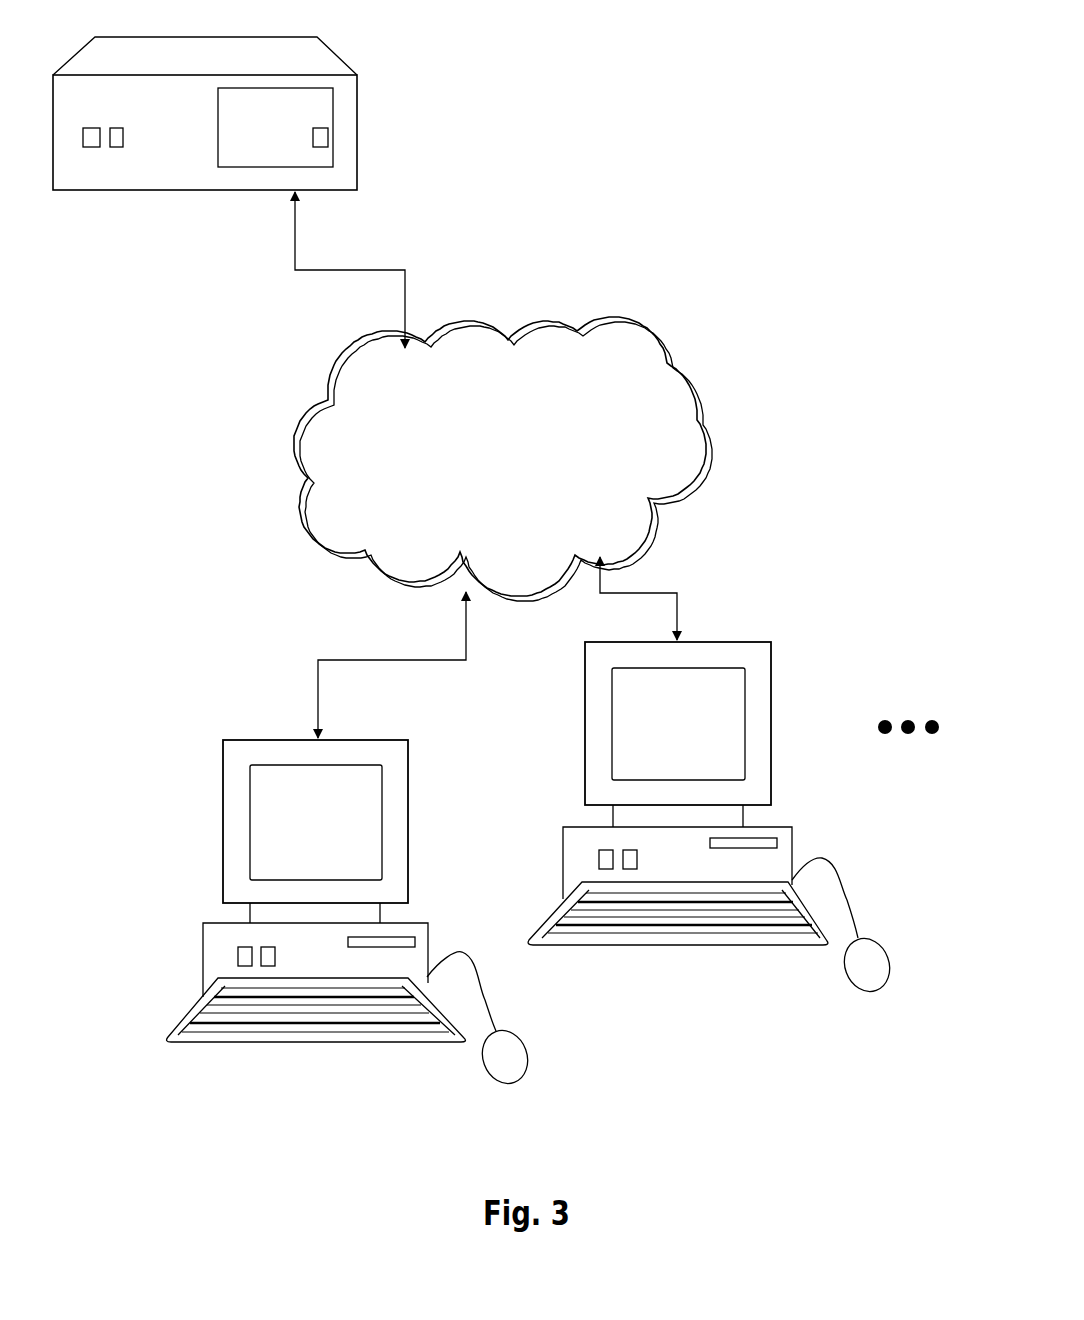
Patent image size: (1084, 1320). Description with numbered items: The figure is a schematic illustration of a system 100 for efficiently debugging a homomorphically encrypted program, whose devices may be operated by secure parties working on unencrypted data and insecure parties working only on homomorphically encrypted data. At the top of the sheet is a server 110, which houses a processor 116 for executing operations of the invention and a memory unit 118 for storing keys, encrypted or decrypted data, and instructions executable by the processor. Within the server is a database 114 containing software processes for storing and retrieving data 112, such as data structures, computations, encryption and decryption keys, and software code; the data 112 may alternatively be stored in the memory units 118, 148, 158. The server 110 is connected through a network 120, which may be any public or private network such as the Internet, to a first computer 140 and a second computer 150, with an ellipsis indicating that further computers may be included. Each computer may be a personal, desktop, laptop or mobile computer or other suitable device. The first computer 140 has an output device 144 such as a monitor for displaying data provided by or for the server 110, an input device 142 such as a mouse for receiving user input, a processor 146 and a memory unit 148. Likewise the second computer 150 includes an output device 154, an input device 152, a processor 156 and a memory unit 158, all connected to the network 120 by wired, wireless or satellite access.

The system 100 is at (785, 196).
The server 110 is at (222, 65).
The data 112 is at (320, 147).
The database 114 is at (275, 127).
The processor 116 is at (90, 147).
The memory unit 118 is at (116, 127).
The network 120 is at (503, 527).
The computer 140 is at (268, 738).
The input device 142 is at (504, 1031).
The output device 144 is at (316, 822).
The processor 146 is at (238, 955).
The memory unit 148 is at (262, 948).
The computer 150 is at (755, 642).
The input device 152 is at (876, 939).
The output device 154 is at (678, 724).
The processor 156 is at (598, 857).
The memory unit 158 is at (630, 852).